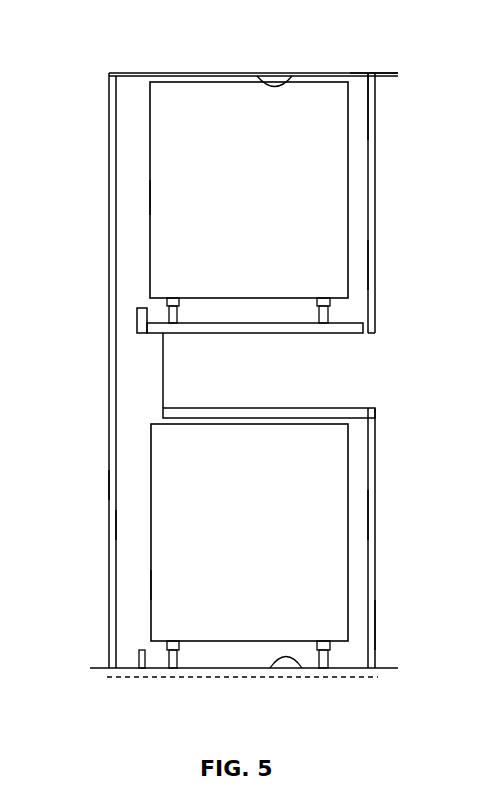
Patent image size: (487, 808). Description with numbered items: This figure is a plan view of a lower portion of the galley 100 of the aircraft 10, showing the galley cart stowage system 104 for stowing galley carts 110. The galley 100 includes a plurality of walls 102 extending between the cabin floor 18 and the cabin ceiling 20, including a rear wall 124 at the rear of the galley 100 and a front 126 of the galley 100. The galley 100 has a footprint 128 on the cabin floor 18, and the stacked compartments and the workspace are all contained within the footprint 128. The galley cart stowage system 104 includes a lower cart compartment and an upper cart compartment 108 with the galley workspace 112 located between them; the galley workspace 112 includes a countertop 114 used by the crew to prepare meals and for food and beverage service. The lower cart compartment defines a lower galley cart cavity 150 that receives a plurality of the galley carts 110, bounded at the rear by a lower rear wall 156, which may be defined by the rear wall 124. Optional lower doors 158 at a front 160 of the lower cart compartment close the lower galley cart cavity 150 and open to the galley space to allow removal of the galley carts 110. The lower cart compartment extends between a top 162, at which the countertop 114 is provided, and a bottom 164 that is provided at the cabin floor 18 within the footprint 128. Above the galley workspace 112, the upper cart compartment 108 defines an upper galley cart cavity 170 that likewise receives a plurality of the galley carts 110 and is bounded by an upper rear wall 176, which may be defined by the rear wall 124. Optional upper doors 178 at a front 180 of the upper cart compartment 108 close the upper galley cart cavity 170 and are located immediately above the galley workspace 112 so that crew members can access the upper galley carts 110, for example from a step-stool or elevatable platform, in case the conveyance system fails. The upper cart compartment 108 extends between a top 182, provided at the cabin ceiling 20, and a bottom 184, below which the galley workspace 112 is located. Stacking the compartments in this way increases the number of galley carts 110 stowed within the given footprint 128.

The galley 100 is at (140, 48).
The galley cart stowage system 104 is at (352, 66).
The cabin ceiling 20 is at (392, 76).
The galley cart 110 is at (322, 152).
The upper doors 178 is at (373, 188).
The upper cart compartment 108 is at (382, 212).
The front of the upper cart compartment 180 is at (373, 272).
The bottom of the upper cart compartment 184 is at (290, 323).
The top of the upper cart compartment 182 is at (292, 76).
The upper rear wall 176 is at (110, 138).
The upper galley cart cavity 170 is at (136, 197).
The rear wall 124 is at (115, 258).
The galley workspace 112 is at (348, 362).
The countertop 114 is at (320, 408).
The front of the lower cart compartment 160 is at (377, 433).
The aircraft 10 is at (414, 443).
The top of the lower cart compartment 162 is at (290, 420).
The lower doors 158 is at (373, 518).
The lower rear wall 156 is at (109, 480).
The walls 102 is at (116, 520).
The lower galley cart cavity 150 is at (136, 586).
The front 126 is at (376, 635).
The cabin floor 18 is at (392, 666).
The bottom of the lower cart compartment 164 is at (302, 668).
The footprint 128 is at (124, 684).